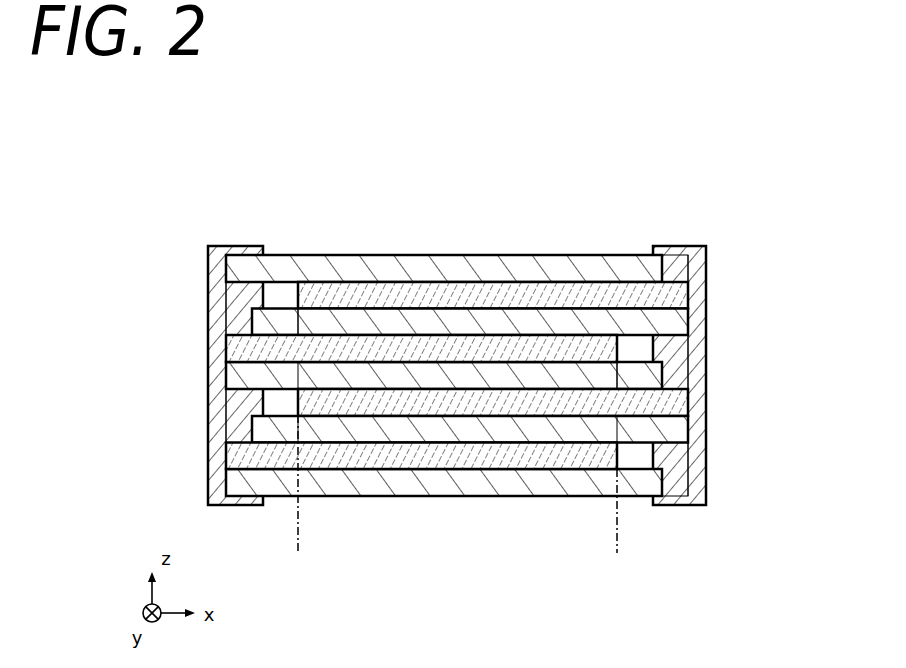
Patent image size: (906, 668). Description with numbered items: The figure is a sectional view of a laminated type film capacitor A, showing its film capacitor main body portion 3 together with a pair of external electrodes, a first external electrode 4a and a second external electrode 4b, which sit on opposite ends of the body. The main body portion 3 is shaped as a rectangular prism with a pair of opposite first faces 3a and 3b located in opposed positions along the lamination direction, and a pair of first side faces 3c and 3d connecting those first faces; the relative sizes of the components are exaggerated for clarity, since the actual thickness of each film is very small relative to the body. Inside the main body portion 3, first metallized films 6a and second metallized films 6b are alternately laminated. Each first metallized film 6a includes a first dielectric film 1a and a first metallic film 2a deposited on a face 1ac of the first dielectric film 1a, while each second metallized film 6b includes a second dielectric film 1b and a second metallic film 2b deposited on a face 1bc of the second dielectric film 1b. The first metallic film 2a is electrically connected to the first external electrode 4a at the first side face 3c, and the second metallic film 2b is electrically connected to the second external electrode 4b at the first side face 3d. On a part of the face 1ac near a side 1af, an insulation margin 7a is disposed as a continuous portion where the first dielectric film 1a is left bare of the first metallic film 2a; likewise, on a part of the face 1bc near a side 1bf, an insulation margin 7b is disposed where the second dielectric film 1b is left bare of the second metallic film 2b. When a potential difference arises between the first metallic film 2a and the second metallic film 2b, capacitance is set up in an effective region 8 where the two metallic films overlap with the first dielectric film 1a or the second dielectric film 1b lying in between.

The film capacitor main body portion 3 is at (582, 123).
The first face 3a is at (297, 243).
The first face 3b is at (628, 510).
The first side face 3c is at (229, 216).
The first side face 3d is at (688, 216).
The first external electrode 4a is at (218, 292).
The second external electrode 4b is at (697, 247).
The first metallized film 6a is at (422, 173).
The second metallized film 6b is at (458, 173).
The first dielectric film 1a is at (430, 473).
The second dielectric film 1b is at (510, 432).
The first metallic film 2a is at (358, 460).
The second metallic film 2b is at (590, 407).
The insulation margin 7a is at (630, 360).
The insulation margin 7b is at (283, 307).
The effective region 8 is at (617, 553).
The side 1af is at (662, 372).
The face 1ac is at (265, 360).
The side 1bf is at (252, 320).
The face 1bc is at (685, 405).
The laminated type film capacitor A is at (652, 82).